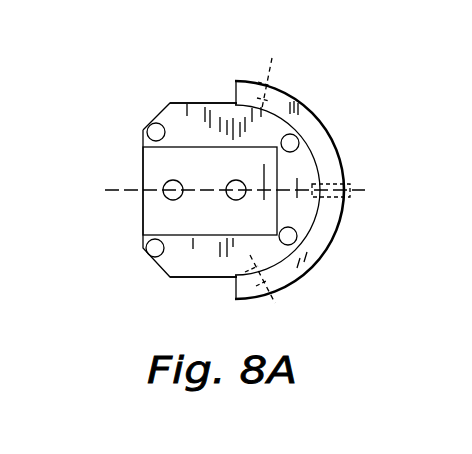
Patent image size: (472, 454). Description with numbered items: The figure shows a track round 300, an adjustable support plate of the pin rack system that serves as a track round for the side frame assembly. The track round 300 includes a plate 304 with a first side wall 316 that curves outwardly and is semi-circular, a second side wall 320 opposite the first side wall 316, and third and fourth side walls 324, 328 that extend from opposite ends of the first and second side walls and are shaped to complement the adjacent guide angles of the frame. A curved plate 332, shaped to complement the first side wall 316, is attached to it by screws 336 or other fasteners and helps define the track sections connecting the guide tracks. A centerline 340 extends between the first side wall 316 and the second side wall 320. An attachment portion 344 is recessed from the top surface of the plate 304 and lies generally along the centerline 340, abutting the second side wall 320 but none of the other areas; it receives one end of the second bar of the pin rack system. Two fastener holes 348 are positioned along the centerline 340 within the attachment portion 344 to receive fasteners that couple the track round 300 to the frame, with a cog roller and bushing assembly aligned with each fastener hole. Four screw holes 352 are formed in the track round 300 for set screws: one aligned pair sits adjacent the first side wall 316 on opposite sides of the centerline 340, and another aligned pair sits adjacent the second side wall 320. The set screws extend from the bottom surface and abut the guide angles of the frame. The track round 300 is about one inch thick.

The track round 300 is at (158, 92).
The plate 304 is at (189, 103).
The first side wall 316 is at (319, 236).
The second side wall 320 is at (143, 148).
The third side wall 324 is at (209, 103).
The fourth side wall 328 is at (182, 278).
The curved plate 332 is at (323, 135).
The screws 336 is at (276, 62).
The centerline 340 is at (118, 196).
The attachment portion 344 is at (238, 221).
The fastener holes 348 is at (236, 181).
The screw holes 352 is at (147, 130).